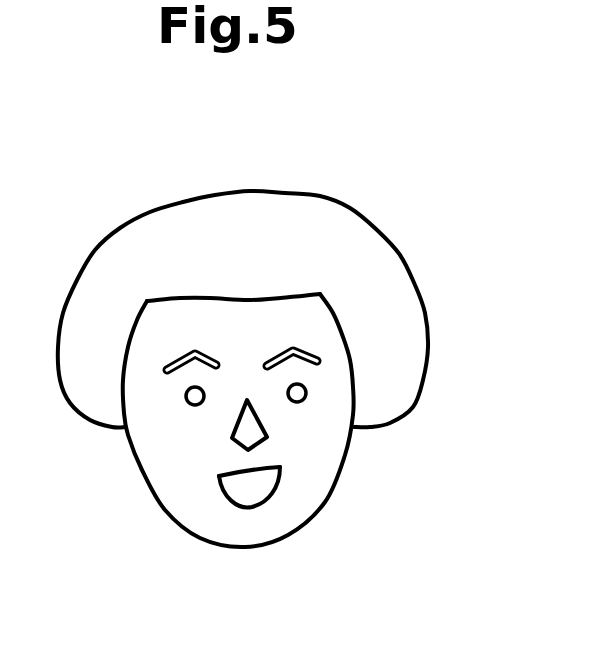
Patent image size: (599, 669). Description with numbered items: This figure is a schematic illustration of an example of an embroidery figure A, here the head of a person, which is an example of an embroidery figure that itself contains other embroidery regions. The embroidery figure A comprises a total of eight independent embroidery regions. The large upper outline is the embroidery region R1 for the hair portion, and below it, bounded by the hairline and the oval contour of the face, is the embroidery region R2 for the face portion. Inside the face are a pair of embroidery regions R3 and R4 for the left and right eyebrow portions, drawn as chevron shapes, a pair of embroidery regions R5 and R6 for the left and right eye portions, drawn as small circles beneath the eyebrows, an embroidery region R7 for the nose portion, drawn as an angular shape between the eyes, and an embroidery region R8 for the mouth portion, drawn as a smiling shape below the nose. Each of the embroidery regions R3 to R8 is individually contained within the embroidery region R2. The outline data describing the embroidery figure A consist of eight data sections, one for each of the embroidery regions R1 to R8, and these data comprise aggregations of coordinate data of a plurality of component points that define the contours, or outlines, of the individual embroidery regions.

The embroidery figure A is at (323, 191).
The embroidery region for the hair portion R1 is at (223, 200).
The embroidery region for the face portion R2 is at (142, 475).
The embroidery region for the left eyebrow portion R3 is at (183, 356).
The embroidery region for the right eyebrow portion R4 is at (282, 353).
The embroidery region for the left eye portion R5 is at (187, 402).
The embroidery region for the right eye portion R6 is at (299, 403).
The embroidery region for the nose portion R7 is at (234, 430).
The embroidery region for the mouth portion R8 is at (281, 473).